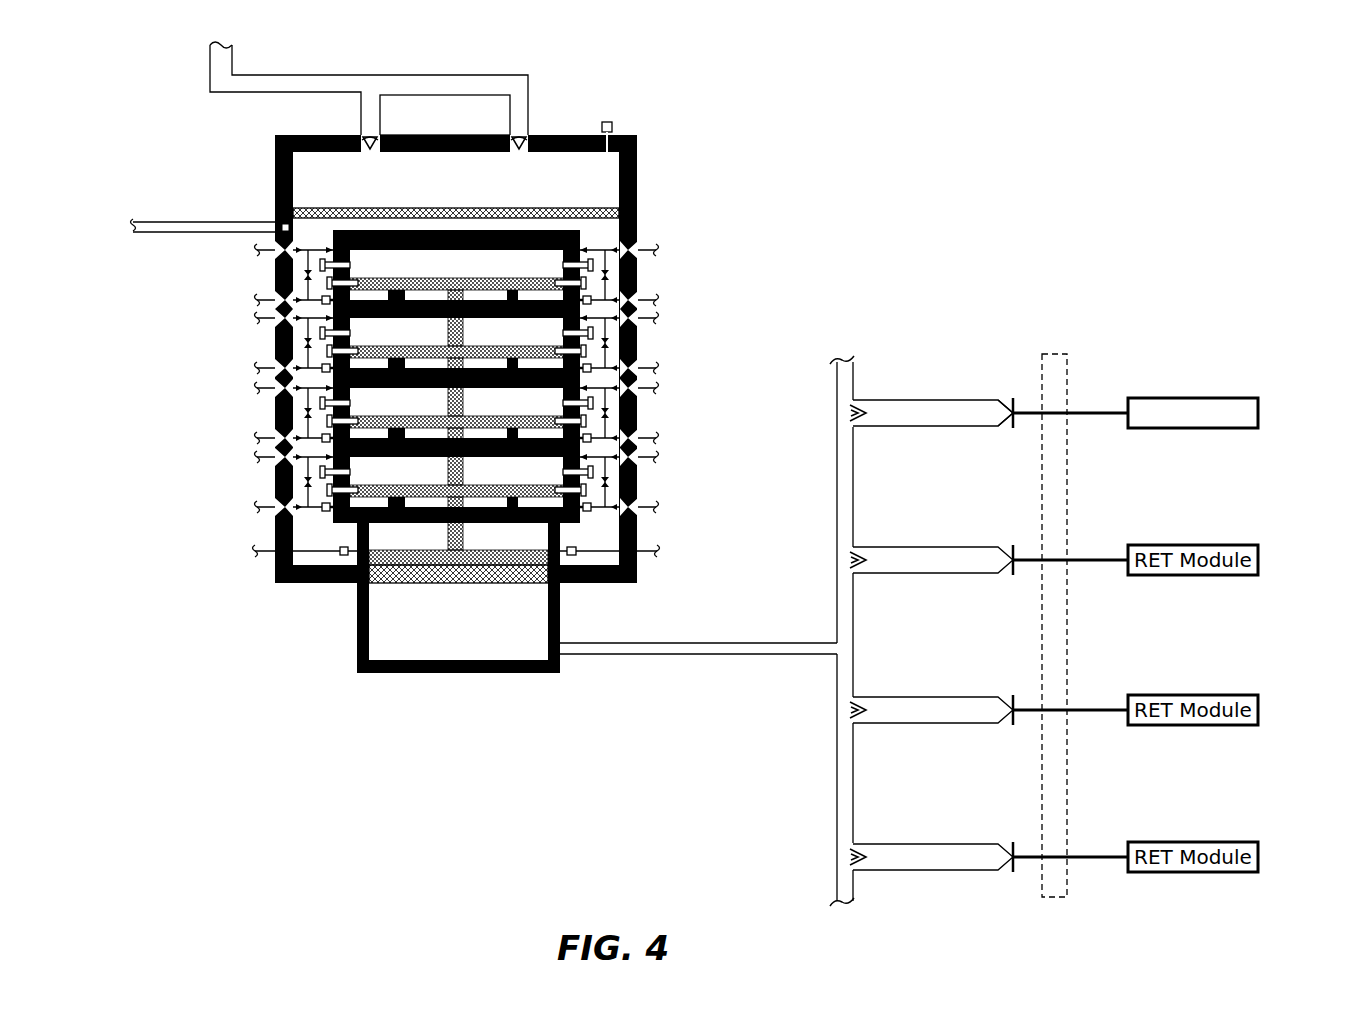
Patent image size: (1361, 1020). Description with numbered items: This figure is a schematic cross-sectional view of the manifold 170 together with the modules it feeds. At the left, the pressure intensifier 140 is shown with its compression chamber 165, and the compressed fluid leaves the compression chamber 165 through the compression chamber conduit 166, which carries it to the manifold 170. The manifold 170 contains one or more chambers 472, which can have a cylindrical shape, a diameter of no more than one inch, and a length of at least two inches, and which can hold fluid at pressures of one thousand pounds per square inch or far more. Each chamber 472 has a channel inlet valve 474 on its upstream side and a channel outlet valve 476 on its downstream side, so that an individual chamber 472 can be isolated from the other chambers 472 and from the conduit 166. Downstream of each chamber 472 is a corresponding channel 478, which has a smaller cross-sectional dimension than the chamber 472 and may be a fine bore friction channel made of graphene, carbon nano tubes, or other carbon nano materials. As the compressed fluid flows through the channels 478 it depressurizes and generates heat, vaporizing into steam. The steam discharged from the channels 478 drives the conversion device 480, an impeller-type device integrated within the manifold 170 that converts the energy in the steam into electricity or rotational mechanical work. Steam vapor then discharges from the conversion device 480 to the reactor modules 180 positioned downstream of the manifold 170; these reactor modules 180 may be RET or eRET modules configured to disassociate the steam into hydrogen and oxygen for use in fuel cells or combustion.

The pressure intensifier 140 is at (684, 145).
The compression chamber 165 is at (438, 627).
The compression chamber conduit 166 is at (635, 656).
The manifold 170 is at (908, 320).
The reactor modules 180 is at (1065, 585).
The chamber 472 is at (935, 401).
The channel inlet valve 474 is at (846, 414).
The channel outlet valve 476 is at (1014, 398).
The channel 478 is at (1015, 427).
The mechanical conversion device 480 is at (1059, 313).